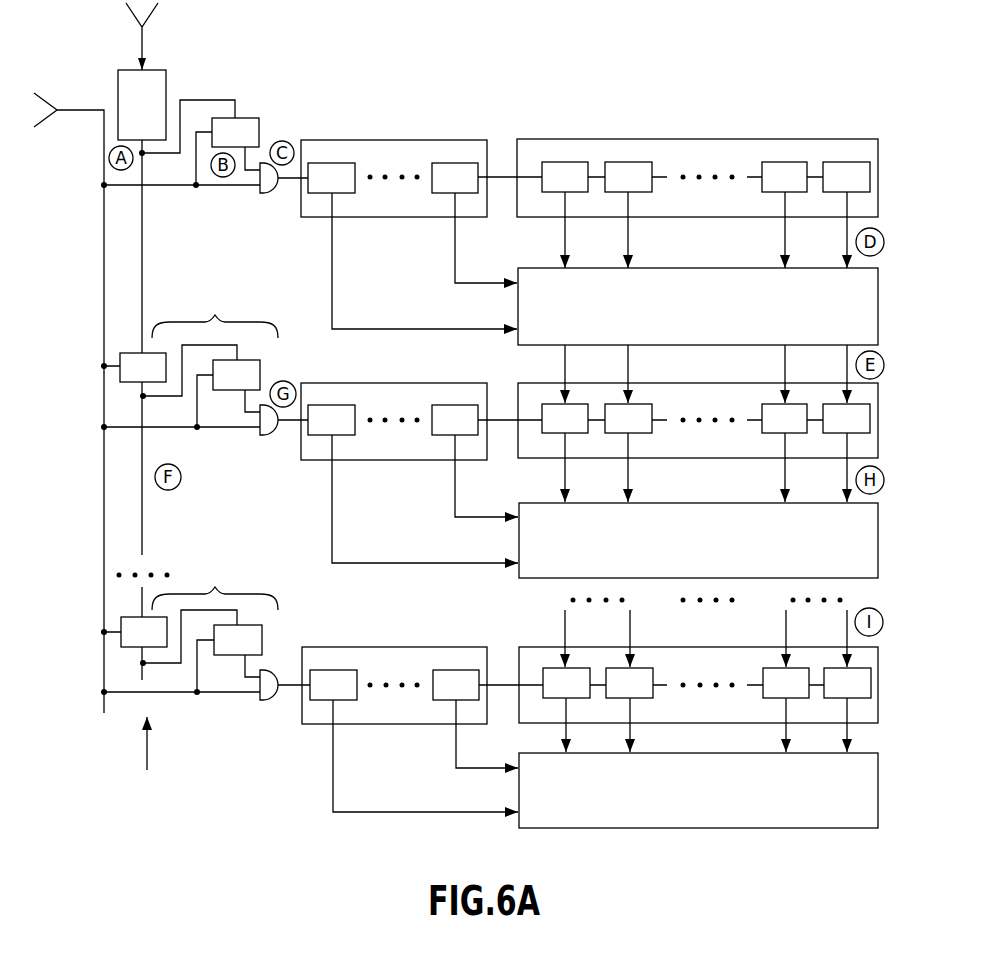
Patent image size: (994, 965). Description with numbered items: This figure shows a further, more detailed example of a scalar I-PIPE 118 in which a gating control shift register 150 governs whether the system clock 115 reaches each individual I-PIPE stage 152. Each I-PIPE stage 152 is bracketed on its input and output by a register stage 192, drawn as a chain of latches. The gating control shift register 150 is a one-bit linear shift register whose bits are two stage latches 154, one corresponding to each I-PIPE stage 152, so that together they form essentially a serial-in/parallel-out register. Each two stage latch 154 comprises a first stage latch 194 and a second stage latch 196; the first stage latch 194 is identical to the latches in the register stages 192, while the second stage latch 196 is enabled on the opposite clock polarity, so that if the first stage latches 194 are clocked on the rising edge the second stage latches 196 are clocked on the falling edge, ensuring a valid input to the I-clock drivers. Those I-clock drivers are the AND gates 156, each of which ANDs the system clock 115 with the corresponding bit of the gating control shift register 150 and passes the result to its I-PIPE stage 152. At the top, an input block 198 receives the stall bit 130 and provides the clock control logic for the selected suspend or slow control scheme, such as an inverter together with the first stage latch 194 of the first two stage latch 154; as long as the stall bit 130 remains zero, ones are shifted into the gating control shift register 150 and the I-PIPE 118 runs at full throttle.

The system clock 115 is at (104, 150).
The I-PIPE 118 is at (710, 121).
The stall bit 130 is at (143, 40).
The gating control shift register 150 is at (149, 760).
The I-PIPE stage 152 is at (722, 320).
The two stage latch 154 is at (215, 450).
The AND gate 156 is at (267, 194).
The register stage 192 is at (721, 207).
The first stage latch 194 is at (465, 459).
The second stage latch 196 is at (259, 129).
The input block 198 is at (166, 89).